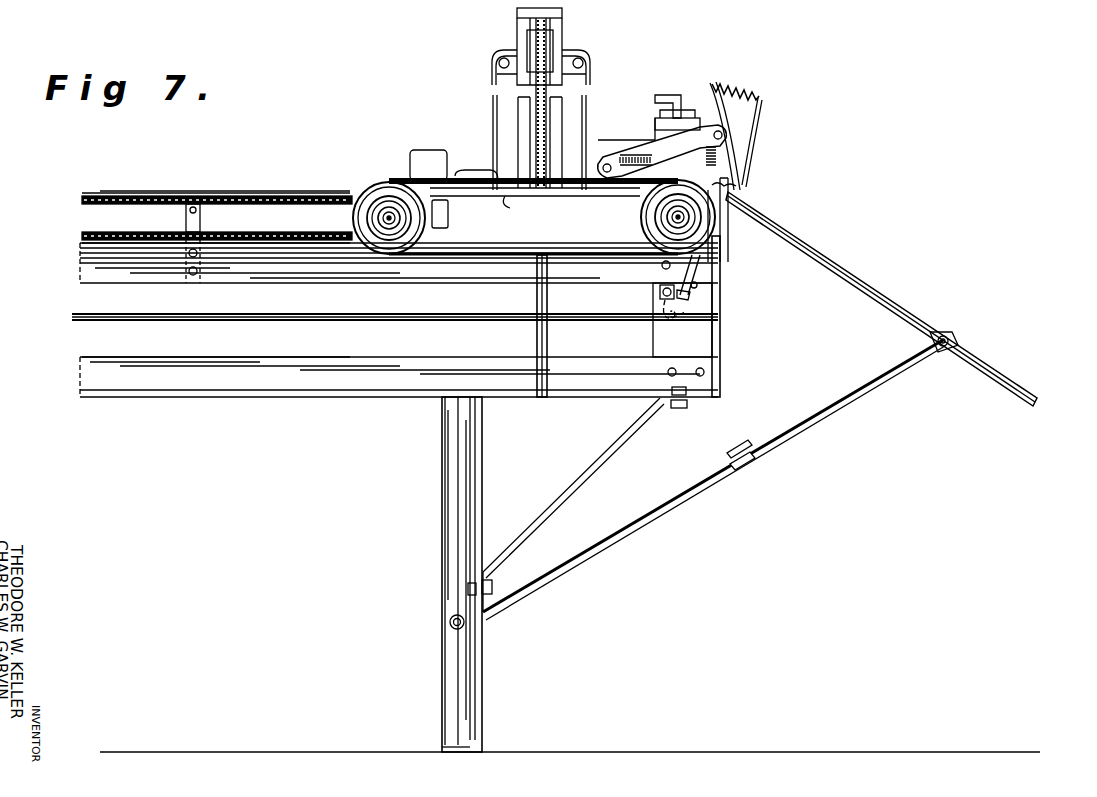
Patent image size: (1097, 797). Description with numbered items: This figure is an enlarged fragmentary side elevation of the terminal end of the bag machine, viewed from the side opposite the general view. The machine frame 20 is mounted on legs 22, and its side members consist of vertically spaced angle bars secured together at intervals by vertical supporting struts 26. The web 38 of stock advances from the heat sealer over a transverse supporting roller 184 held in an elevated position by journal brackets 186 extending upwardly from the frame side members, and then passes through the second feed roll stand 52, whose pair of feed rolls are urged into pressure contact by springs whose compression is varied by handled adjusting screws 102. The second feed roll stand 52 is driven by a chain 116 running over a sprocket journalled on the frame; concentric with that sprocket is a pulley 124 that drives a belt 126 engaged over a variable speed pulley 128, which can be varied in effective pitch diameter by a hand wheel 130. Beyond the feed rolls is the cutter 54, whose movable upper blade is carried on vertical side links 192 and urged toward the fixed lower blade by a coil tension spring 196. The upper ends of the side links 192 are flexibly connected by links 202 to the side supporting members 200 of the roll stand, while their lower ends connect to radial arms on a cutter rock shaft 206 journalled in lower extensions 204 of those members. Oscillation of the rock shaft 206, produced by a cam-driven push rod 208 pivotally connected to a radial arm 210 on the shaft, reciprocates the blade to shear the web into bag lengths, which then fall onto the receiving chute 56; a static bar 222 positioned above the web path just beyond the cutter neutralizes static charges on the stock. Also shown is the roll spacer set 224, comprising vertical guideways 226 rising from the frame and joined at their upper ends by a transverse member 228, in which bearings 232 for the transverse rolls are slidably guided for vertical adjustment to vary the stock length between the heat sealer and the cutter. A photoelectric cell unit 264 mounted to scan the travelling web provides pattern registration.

The frame 20 is at (250, 400).
The legs 22 is at (482, 697).
The vertical supporting struts 26 is at (536, 330).
The web 38 is at (497, 120).
The second feed roll stand 52 is at (650, 104).
The cutter 54 is at (755, 136).
The receiving chute 56 is at (848, 270).
The adjusting screws 102 is at (672, 95).
The chain 116 is at (82, 234).
The pulley 124 is at (370, 190).
The belt 126 is at (470, 252).
The variable speed pulley 128 is at (650, 214).
The hand wheel 130 is at (662, 222).
The transverse supporting roller 184 is at (205, 212).
The journal brackets 186 is at (186, 214).
The vertical side links 192 is at (725, 156).
The coil tension spring 196 is at (748, 90).
The side supporting members 200 is at (720, 333).
The links 202 is at (638, 148).
The lower extensions 204 is at (690, 297).
The cutter rock shaft 206 is at (660, 293).
The push rod 208 is at (308, 318).
The radial arm 210 is at (690, 318).
The static bar 222 is at (730, 192).
The roll spacer set 224 is at (488, 64).
The vertical guideways 226 is at (520, 118).
The transverse member 228 is at (563, 14).
The bearings 232 is at (553, 50).
The photoelectric cell unit 264 is at (405, 145).